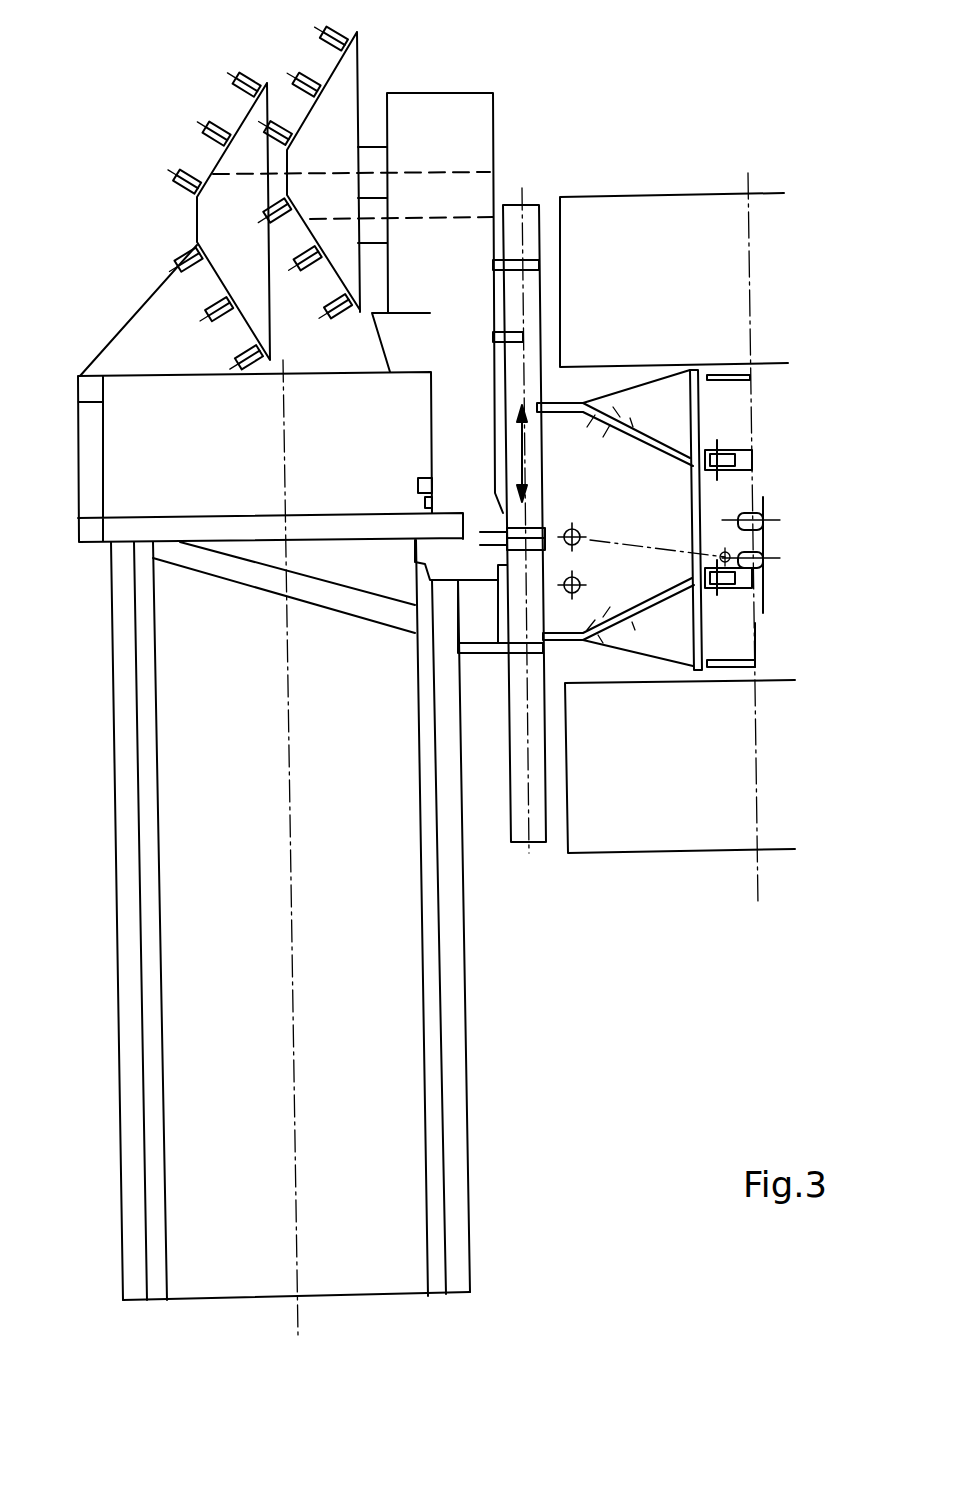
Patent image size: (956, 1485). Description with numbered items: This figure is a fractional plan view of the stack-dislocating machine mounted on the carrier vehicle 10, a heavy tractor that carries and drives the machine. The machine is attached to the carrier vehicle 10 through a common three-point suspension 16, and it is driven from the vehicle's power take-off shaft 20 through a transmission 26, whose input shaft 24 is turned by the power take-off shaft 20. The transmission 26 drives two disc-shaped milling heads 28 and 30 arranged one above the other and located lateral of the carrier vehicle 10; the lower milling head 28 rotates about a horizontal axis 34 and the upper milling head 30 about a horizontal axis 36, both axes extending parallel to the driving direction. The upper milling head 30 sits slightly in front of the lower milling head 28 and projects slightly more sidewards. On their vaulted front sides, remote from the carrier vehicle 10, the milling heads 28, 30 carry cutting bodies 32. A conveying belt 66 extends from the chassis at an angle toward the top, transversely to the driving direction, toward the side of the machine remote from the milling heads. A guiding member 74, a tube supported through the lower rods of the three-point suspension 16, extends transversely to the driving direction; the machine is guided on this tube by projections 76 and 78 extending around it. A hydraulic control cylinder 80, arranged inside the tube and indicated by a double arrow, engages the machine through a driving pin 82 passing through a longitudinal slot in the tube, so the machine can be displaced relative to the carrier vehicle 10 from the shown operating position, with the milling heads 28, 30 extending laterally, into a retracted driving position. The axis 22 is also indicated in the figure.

The carrier vehicle 10 is at (770, 152).
The three-point suspension 16 is at (595, 672).
The power take-off shaft 20 is at (762, 562).
The axis 22 is at (630, 543).
The input shaft 24 is at (525, 523).
The transmission 26 is at (495, 138).
The lower milling head 28 is at (340, 113).
The upper milling head 30 is at (210, 173).
The cutting bodies 32 is at (217, 125).
The horizontal axis 34 is at (417, 170).
The horizontal axis 36 is at (457, 218).
The conveying belt 66 is at (405, 1148).
The guiding member 74 is at (530, 830).
The projection 76 is at (530, 265).
The projection 78 is at (478, 657).
The hydraulic control cylinder 80 is at (530, 443).
The driving pin 82 is at (565, 315).